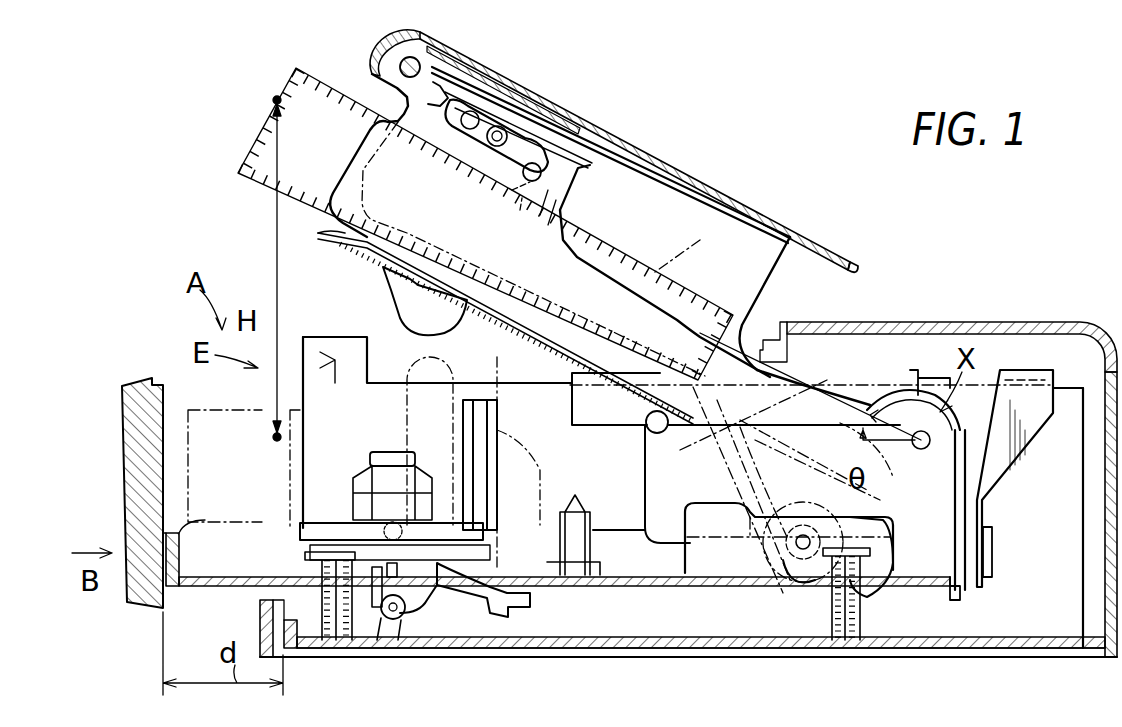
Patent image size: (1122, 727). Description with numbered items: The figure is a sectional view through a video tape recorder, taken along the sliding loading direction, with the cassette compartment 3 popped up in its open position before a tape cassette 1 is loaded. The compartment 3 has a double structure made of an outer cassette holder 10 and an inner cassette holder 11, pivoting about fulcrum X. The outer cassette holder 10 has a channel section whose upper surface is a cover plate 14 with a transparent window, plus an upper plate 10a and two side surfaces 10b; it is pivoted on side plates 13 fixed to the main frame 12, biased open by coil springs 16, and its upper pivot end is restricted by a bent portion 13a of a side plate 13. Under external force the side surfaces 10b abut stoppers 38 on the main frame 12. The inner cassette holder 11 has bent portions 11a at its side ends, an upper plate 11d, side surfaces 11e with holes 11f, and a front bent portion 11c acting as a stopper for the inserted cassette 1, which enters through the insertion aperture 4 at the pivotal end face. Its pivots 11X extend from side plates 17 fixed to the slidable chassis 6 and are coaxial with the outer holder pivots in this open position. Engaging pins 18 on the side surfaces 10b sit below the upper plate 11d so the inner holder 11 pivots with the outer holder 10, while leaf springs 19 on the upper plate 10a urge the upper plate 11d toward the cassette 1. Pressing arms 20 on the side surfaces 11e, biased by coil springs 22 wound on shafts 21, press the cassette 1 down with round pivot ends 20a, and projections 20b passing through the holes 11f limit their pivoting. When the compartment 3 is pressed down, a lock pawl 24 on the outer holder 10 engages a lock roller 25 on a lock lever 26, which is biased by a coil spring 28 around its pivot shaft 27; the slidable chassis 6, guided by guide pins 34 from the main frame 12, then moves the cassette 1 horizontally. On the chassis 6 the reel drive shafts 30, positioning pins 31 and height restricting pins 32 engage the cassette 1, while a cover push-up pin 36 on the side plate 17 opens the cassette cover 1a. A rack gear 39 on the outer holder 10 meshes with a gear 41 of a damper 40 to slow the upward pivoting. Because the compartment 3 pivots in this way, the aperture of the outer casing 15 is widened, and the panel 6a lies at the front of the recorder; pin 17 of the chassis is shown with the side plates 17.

The tape cassette 1 is at (250, 158).
The cassette cover 1a is at (690, 268).
The cassette compartment 3 is at (624, 207).
The insertion aperture 4 is at (356, 78).
The slidable chassis 6 is at (622, 586).
The front panel 6a is at (122, 432).
The outer cassette holder 10 is at (770, 265).
The upper plate of the outer cassette holder 10a is at (478, 72).
The side surfaces of the outer cassette holder 10b is at (705, 207).
The inner cassette holder 11 is at (622, 272).
The bent portion of the inner cassette holder 11a is at (362, 250).
The bent portion (stopper) 11c is at (694, 428).
The upper plate of the inner cassette holder 11d is at (575, 150).
The side surfaces of the inner cassette holder 11e is at (575, 175).
The holes 11f is at (552, 215).
The pivots of the inner cassette holder 11X is at (918, 448).
The main frame 12 is at (630, 648).
The side plates 13 is at (998, 470).
The bent portion of the side plate 13a is at (880, 590).
The cover plate 14 is at (835, 265).
The outer casing 15 is at (980, 322).
The coil springs 16 is at (987, 512).
The side plates of the slidable chassis 17 is at (958, 592).
The engaging pins 18 is at (540, 110).
The leaf springs 19 is at (548, 128).
The pressing arms 20 is at (518, 172).
The round pivot ends 20a is at (542, 180).
The projections 20b is at (525, 205).
The shafts 21 is at (490, 145).
The coil springs 22 is at (462, 130).
The lock pawl 24 is at (400, 308).
The lock roller 25 is at (385, 520).
The lock lever 26 is at (488, 618).
The pivot shaft 27 is at (390, 620).
The coil spring 28 is at (400, 635).
The reel drive shafts 30 is at (385, 452).
The positioning pins 31 is at (565, 580).
The height restricting pins 32 is at (170, 530).
The guide pins 34 is at (325, 640).
The cover push-up pin 36 is at (645, 430).
The stoppers 38 is at (495, 490).
The rack gear 39 is at (766, 480).
The damper 40 is at (800, 365).
The gear of the damper 41 is at (803, 560).